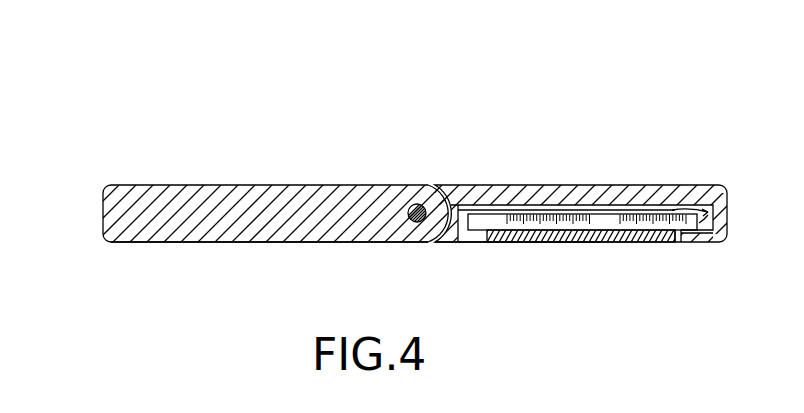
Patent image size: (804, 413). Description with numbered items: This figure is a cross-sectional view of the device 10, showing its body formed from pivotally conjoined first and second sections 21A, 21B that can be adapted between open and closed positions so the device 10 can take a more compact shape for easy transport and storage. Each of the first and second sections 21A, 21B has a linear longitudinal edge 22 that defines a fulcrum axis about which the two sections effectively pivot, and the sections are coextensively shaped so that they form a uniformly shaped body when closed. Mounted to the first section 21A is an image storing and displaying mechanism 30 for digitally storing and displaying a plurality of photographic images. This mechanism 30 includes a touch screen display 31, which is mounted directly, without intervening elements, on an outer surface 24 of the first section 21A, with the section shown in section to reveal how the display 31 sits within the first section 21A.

The device 10 is at (175, 76).
The first section 21A is at (503, 200).
The second section 21B is at (305, 202).
The linear longitudinal edge 22 is at (416, 203).
The outer surface 24 is at (226, 242).
The image storing and displaying mechanism 30 is at (593, 216).
The touch screen display 31 is at (627, 243).